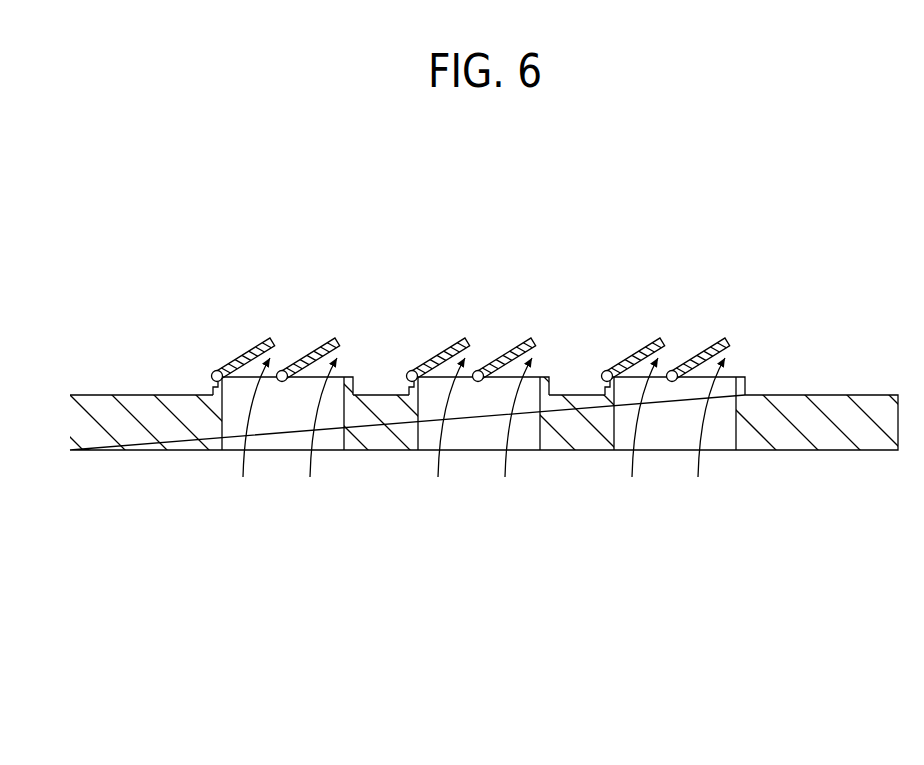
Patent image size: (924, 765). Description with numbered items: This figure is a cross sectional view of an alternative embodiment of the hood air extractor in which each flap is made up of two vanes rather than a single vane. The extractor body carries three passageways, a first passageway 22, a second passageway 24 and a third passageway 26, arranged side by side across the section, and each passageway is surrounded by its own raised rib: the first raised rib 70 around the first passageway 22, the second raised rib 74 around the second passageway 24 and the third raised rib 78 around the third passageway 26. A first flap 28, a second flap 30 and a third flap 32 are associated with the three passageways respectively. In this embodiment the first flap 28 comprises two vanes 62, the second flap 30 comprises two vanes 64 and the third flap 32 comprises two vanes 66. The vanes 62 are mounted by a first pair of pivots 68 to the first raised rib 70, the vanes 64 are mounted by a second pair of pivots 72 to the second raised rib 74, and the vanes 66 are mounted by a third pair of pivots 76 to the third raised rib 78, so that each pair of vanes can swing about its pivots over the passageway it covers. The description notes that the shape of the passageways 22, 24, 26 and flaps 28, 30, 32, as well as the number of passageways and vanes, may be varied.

The first passageway 22 is at (288, 435).
The second passageway 24 is at (475, 437).
The third passageway 26 is at (665, 440).
The first flap 28 is at (297, 305).
The second flap 30 is at (508, 318).
The third flap 32 is at (707, 307).
The vanes 62 is at (247, 350).
The vanes 64 is at (503, 353).
The vanes 66 is at (698, 352).
The first pair of pivots 68 is at (280, 381).
The first raised rib 70 is at (353, 388).
The second pair of pivots 72 is at (477, 381).
The second raised rib 74 is at (550, 387).
The third pair of pivots 76 is at (671, 381).
The third raised rib 78 is at (745, 383).